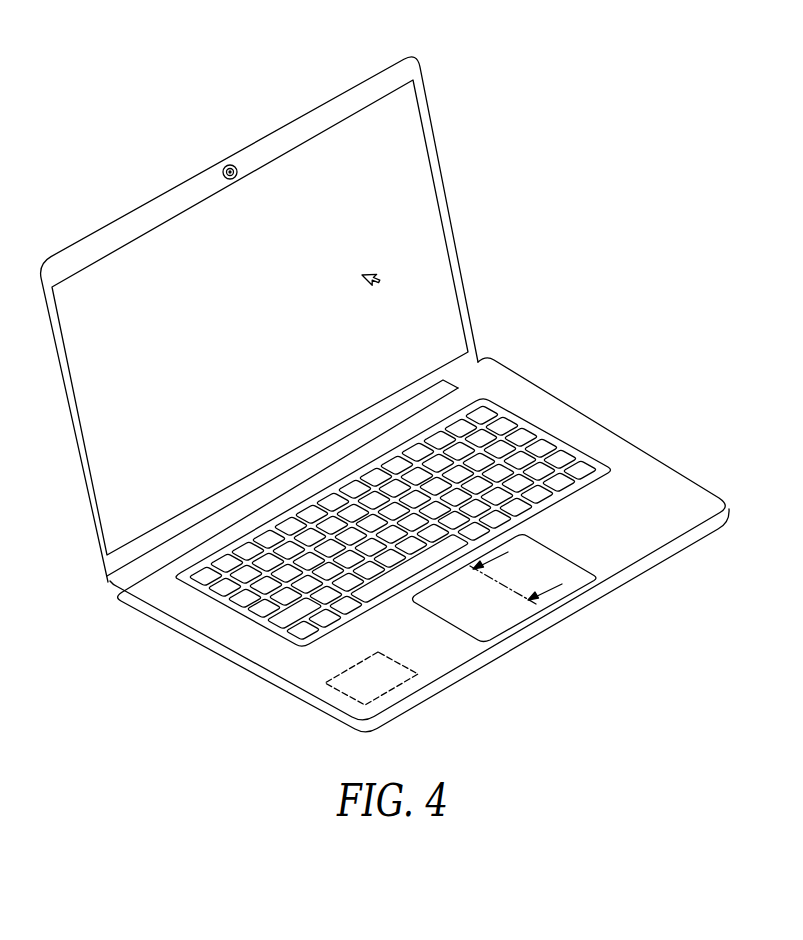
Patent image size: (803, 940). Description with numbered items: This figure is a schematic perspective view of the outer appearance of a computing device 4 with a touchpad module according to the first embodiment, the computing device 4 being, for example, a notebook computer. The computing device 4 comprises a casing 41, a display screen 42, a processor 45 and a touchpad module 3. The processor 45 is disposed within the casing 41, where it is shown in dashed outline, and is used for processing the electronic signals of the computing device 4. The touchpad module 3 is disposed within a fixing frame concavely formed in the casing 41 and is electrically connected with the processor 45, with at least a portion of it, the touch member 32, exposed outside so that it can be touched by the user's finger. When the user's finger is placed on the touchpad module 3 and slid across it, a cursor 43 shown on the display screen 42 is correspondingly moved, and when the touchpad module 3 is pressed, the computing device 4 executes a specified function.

The computing device 4 is at (626, 184).
The casing 41 is at (664, 478).
The display screen 42 is at (413, 141).
The cursor 43 is at (371, 273).
The touchpad module 3 is at (507, 613).
The touch member 32 is at (482, 627).
The processor 45 is at (358, 688).